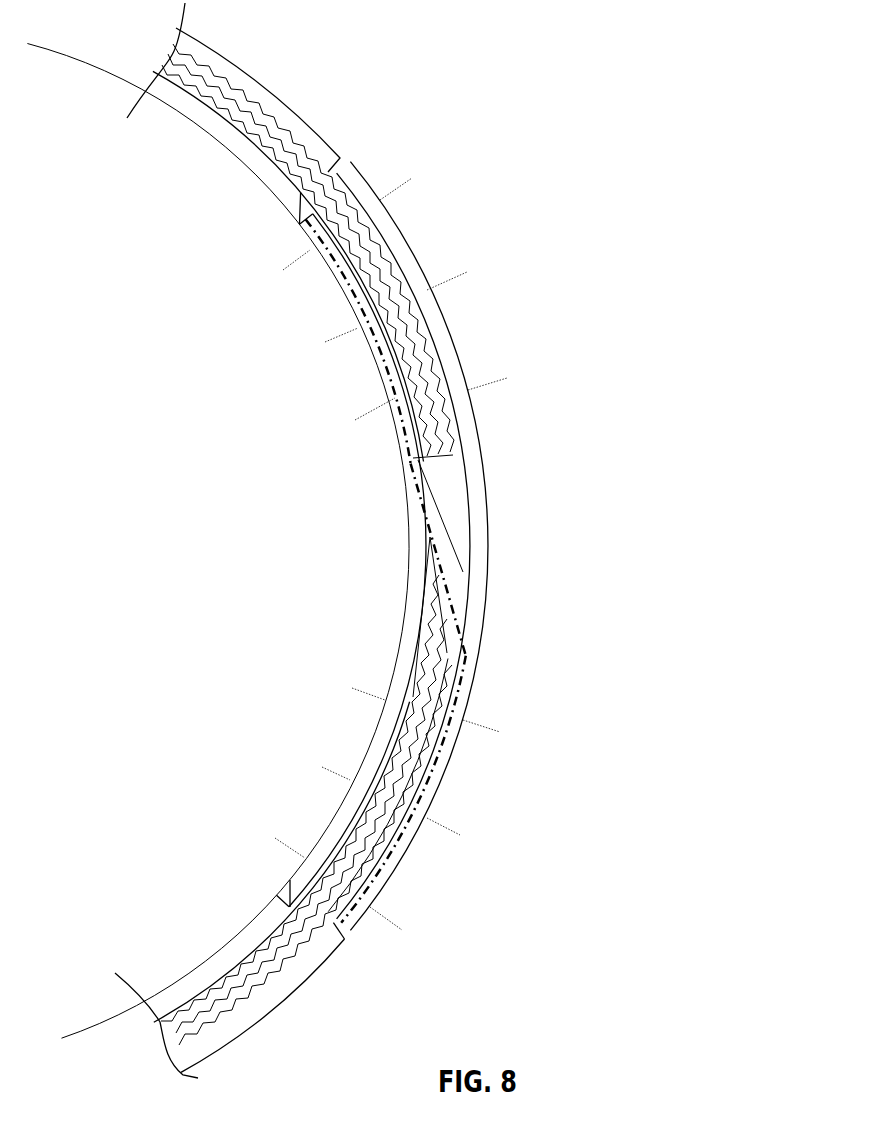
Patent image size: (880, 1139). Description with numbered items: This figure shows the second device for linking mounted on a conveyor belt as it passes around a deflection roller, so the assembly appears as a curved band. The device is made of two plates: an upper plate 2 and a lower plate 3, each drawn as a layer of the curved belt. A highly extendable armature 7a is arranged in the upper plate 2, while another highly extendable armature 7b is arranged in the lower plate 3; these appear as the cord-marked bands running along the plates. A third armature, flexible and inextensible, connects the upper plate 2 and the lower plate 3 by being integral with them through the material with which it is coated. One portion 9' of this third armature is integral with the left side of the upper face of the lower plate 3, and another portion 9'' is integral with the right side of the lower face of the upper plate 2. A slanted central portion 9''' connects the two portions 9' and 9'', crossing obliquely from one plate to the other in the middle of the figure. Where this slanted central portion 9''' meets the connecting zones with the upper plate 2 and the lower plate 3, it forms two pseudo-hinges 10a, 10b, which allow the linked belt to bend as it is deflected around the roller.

The upper plate 2 is at (349, 183).
The lower plate 3 is at (300, 222).
The highly extendable armature 7a is at (446, 345).
The highly extendable armature 7b is at (370, 748).
The portion of the third armature 9' is at (432, 789).
The portion of the third armature 9'' is at (319, 341).
The slanted central portion 9''' is at (373, 560).
The pseudo-hinge 10a is at (461, 656).
The pseudo-hinge 10b is at (420, 462).